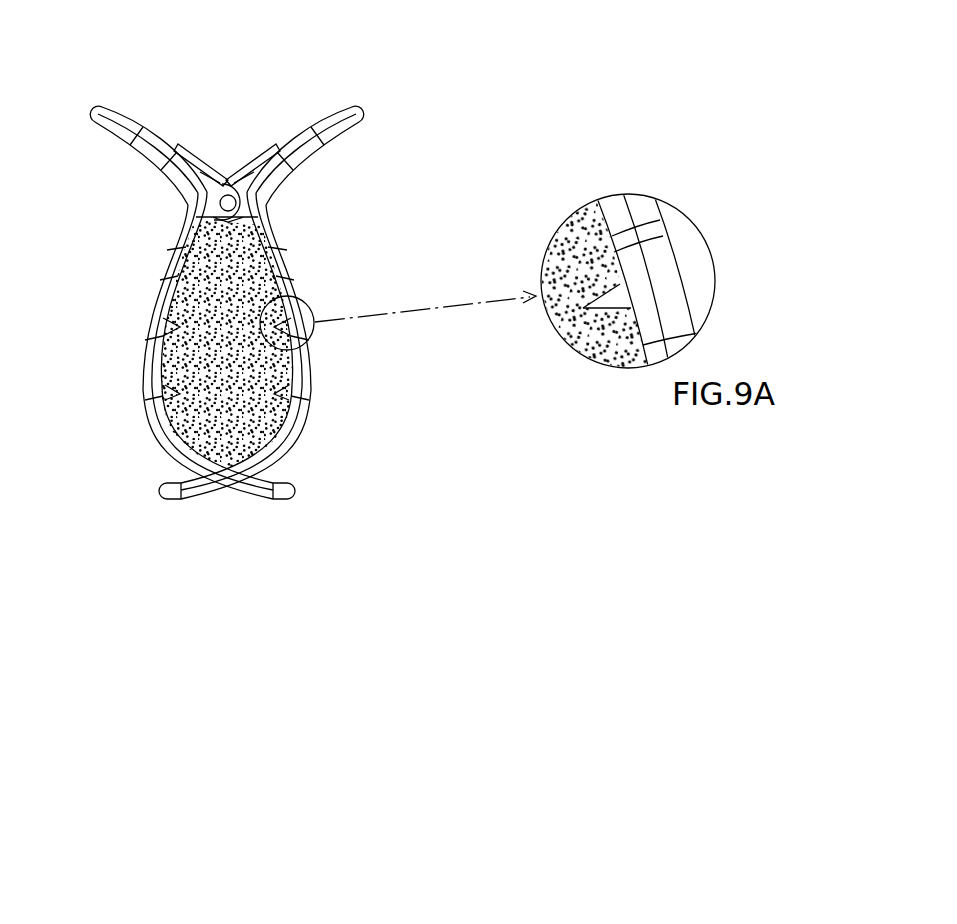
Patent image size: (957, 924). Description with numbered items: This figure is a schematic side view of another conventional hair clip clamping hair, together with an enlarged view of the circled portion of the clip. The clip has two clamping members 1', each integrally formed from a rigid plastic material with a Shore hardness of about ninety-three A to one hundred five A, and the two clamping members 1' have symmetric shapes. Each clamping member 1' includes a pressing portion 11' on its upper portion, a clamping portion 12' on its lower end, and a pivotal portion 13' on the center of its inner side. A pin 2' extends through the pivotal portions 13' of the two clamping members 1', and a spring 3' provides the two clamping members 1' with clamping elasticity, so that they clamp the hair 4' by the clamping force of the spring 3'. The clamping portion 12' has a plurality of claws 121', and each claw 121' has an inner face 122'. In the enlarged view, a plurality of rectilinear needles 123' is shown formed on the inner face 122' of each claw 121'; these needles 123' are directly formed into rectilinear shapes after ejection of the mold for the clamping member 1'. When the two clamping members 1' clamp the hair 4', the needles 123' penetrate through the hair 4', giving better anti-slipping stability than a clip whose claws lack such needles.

In FIG. 9, the clamping member 1' is at (275, 460).
In FIG. 9, the pressing portion 11' is at (226, 114).
In FIG. 9, the clamping portion 12' is at (163, 345).
In FIG. 9A, the clamping portion 12' is at (654, 311).
In FIG. 9, the claw 121' is at (163, 346).
In FIG. 9A, the claw 121' is at (716, 282).
In FIG. 9, the inner face 122' is at (154, 337).
In FIG. 9A, the inner face 122' is at (666, 276).
In FIG. 9A, the rectilinear needle 123' is at (614, 374).
In FIG. 9, the pivotal portion 13' is at (162, 197).
In FIG. 9, the pin 2' is at (201, 104).
In FIG. 9, the spring 3' is at (255, 104).
In FIG. 9, the hair 4' is at (166, 344).
In FIG. 9A, the hair 4' is at (569, 282).